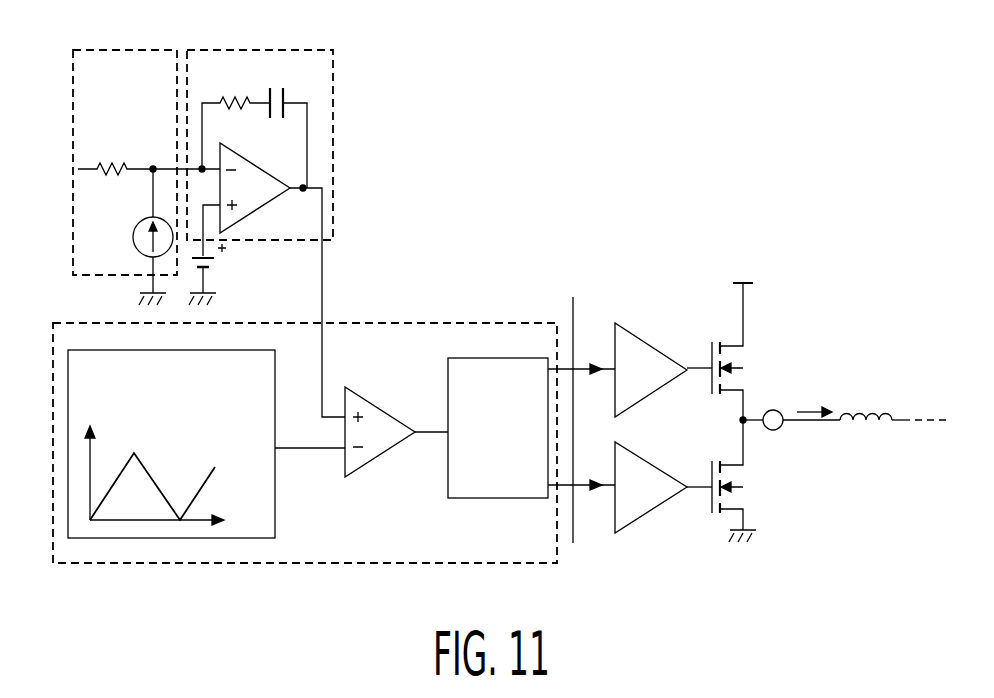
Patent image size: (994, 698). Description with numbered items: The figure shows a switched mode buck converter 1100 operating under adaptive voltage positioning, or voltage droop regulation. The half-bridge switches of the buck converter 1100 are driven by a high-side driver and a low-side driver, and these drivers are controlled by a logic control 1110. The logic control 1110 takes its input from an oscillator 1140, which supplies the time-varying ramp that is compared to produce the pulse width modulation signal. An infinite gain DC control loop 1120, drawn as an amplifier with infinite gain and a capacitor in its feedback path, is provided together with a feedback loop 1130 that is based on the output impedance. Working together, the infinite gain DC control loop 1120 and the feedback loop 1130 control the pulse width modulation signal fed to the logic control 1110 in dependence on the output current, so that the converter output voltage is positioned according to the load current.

The buck converter with AVP regulation 1100 is at (487, 134).
The logic control 1110 is at (505, 500).
The infinite gain DC control loop 1120 is at (292, 50).
The feedback loop based on output impedance 1130 is at (128, 50).
The oscillator 1140 is at (194, 388).